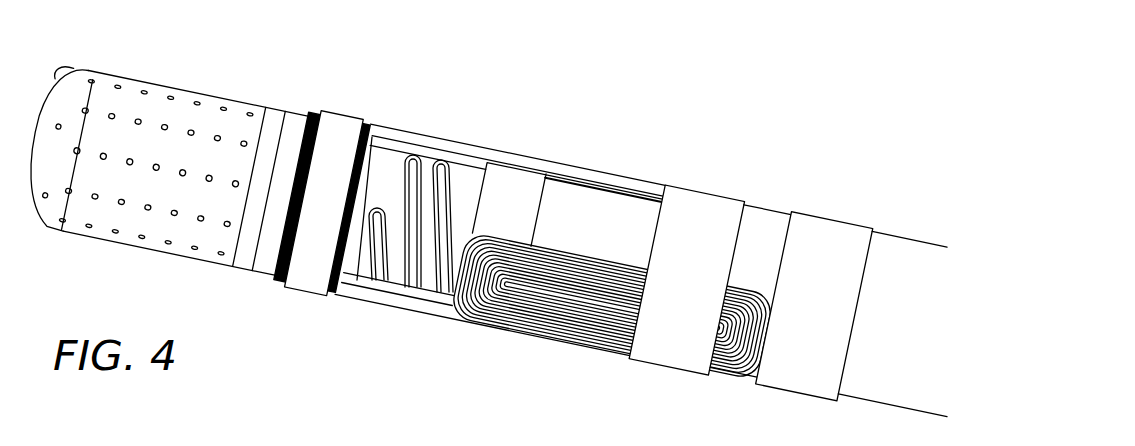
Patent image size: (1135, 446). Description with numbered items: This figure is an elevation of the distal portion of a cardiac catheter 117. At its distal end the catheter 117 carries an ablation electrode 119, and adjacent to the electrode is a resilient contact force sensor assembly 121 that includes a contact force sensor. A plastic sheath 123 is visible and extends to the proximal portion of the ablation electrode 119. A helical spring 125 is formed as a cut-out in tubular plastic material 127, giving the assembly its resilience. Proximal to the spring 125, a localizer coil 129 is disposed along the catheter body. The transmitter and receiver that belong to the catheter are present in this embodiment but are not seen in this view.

The cardiac catheter 117 is at (178, 50).
The ablation electrode 119 is at (257, 108).
The resilient contact force sensor assembly 121 is at (356, 224).
The plastic sheath 123 is at (398, 133).
The helical spring 125 is at (445, 163).
The tubular plastic material 127 is at (472, 182).
The localizer coil 129 is at (513, 313).